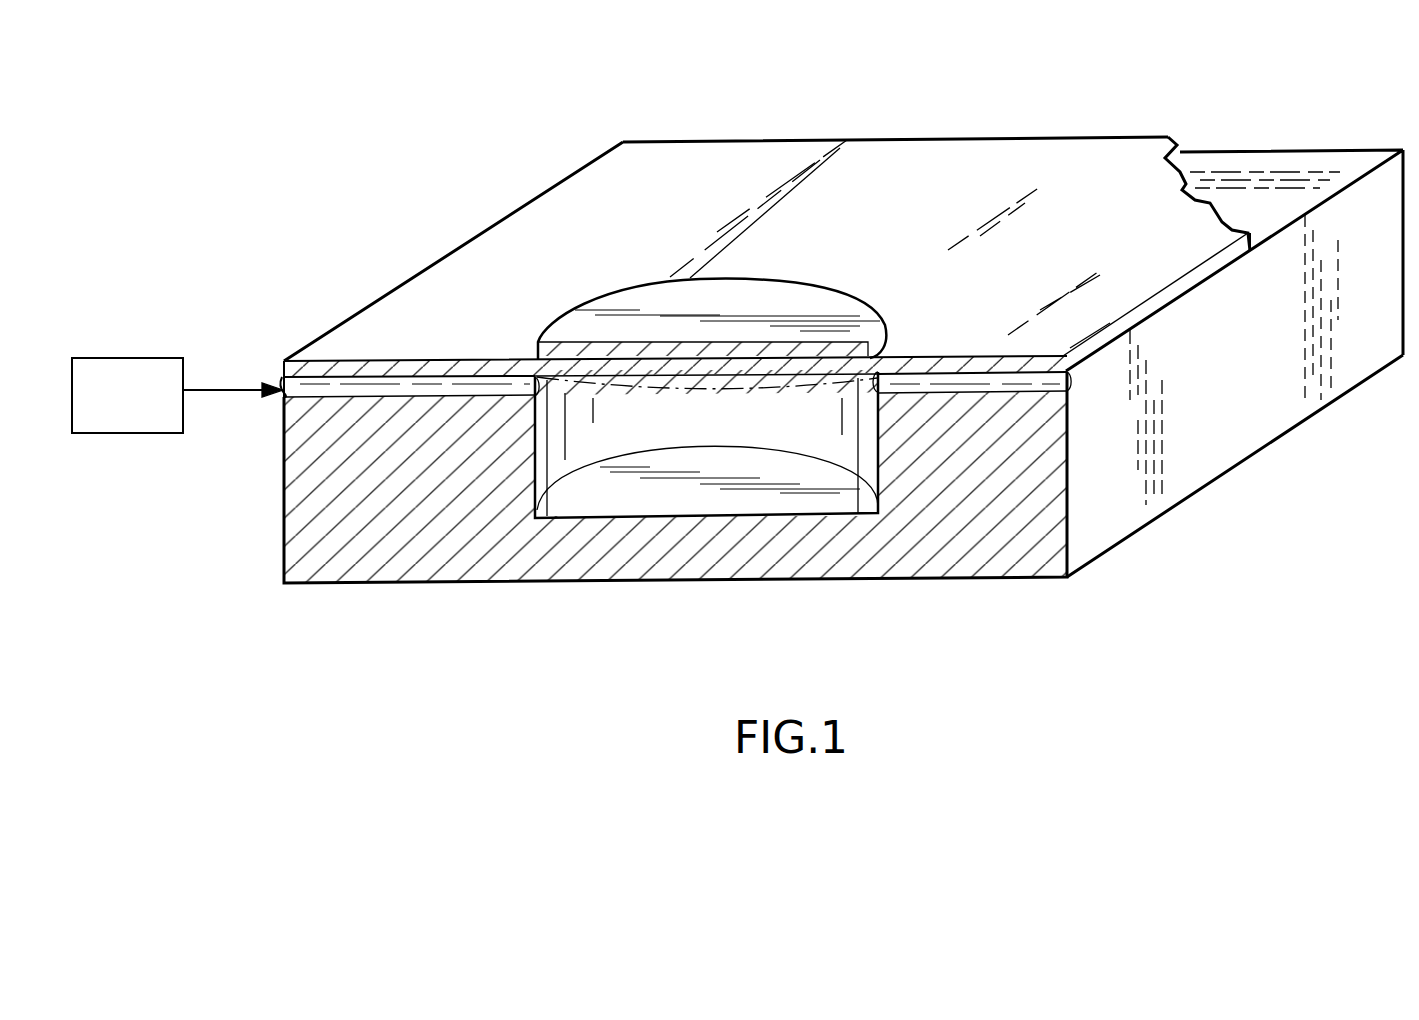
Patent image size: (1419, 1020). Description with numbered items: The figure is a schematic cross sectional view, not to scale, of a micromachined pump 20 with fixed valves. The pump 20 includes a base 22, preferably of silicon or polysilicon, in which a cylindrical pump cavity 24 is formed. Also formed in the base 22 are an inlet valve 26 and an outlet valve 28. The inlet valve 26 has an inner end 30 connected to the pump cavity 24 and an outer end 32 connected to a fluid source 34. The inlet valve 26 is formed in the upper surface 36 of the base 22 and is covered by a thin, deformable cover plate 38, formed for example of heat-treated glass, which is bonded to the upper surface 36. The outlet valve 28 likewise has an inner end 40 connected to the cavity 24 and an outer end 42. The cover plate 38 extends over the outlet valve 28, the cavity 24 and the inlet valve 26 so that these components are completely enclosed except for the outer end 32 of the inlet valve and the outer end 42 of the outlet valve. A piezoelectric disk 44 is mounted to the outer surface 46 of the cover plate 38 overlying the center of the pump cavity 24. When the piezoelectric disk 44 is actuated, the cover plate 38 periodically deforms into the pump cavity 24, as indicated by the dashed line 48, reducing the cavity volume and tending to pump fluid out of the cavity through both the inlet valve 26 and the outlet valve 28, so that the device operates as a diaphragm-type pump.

The pump 20 is at (984, 106).
The base 22 is at (1107, 530).
The pump cavity 24 is at (843, 447).
The inlet valve 26 is at (342, 387).
The outlet valve 28 is at (1013, 383).
The inner end 30 is at (540, 380).
The outer end 32 is at (288, 393).
The fluid source 34 is at (132, 433).
The upper surface 36 is at (1340, 163).
The cover plate 38 is at (700, 160).
The inner end 40 is at (878, 375).
The outer end 42 is at (1070, 377).
The piezoelectric disk 44 is at (623, 300).
The outer surface 46 is at (870, 202).
The dashed line 48 is at (792, 385).